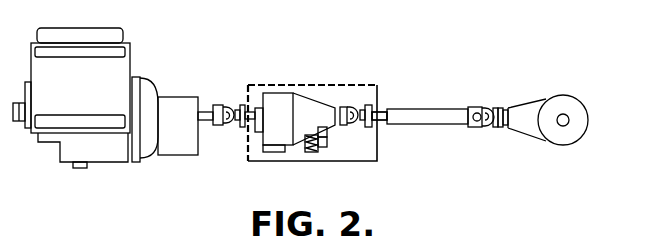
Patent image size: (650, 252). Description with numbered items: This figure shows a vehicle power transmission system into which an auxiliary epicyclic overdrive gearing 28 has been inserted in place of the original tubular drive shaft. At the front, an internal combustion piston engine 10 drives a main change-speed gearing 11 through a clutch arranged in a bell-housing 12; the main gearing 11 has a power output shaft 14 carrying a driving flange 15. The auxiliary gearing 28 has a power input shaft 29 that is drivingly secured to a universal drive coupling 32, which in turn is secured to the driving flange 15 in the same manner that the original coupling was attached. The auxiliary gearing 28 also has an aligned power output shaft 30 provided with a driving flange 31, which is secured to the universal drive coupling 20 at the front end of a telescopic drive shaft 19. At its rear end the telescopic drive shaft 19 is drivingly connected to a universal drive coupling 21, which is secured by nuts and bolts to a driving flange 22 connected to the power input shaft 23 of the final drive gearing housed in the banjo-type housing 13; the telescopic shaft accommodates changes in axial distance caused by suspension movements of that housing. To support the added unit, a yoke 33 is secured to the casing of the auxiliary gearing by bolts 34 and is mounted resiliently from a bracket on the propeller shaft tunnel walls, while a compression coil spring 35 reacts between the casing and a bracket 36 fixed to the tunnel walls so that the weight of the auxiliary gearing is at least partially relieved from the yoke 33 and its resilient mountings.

The internal combustion piston engine 10 is at (85, 96).
The main change-speed gearing 11 is at (183, 135).
The bell-housing 12 is at (147, 80).
The banjo-type housing 13 is at (570, 100).
The power output shaft 14 is at (205, 118).
The driving flange 15 is at (215, 105).
The telescopic drive shaft 19 is at (427, 121).
The universal drive coupling 20 is at (378, 108).
The universal drive coupling 21 is at (478, 112).
The driving flange 22 is at (505, 127).
The power input shaft 23 is at (510, 110).
The auxiliary epicyclic overdrive gearing 28 is at (290, 128).
The power input shaft 29 is at (246, 124).
The power output shaft 30 is at (337, 108).
The driving flange 31 is at (376, 150).
The universal drive coupling 32 is at (237, 104).
The yoke 33 is at (323, 141).
The bolts 34 is at (328, 130).
The compression coil spring 35 is at (307, 148).
The bracket 36 is at (313, 152).